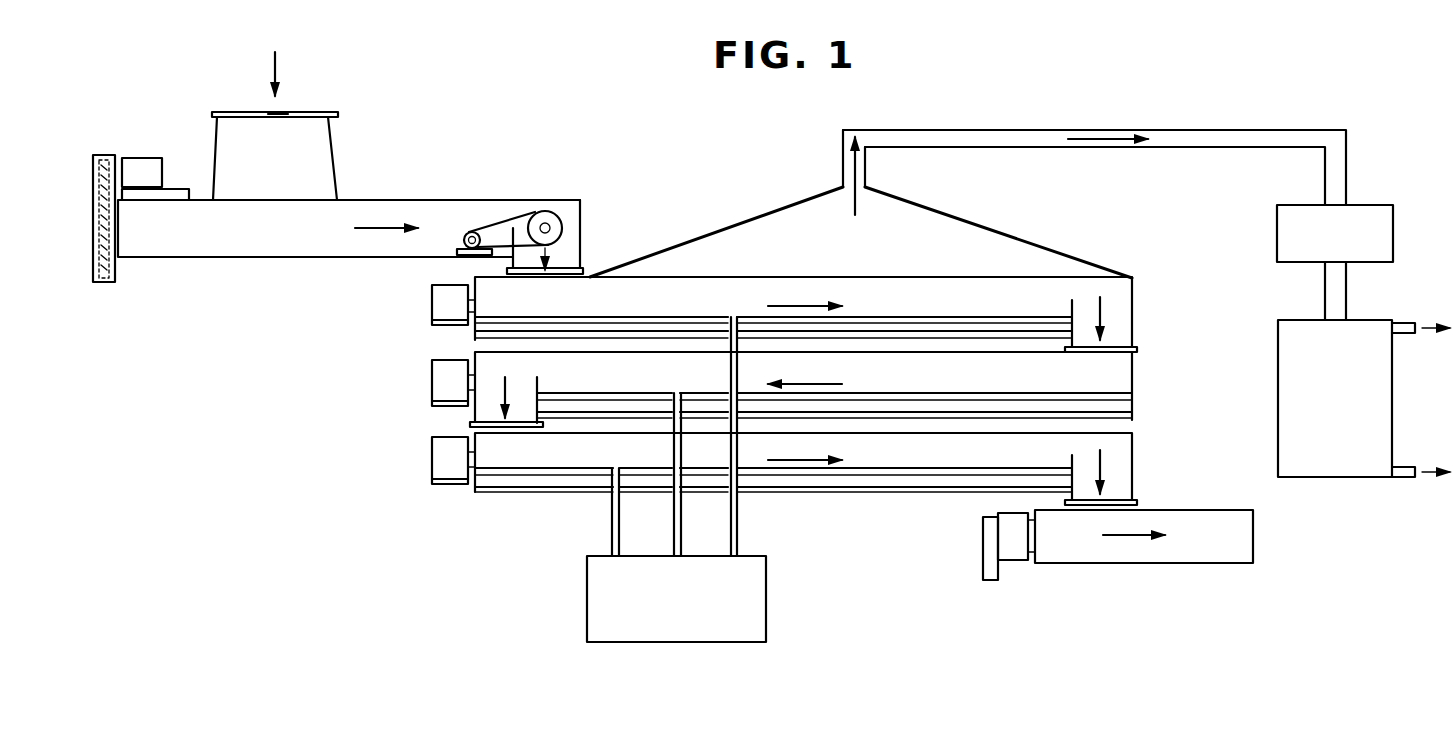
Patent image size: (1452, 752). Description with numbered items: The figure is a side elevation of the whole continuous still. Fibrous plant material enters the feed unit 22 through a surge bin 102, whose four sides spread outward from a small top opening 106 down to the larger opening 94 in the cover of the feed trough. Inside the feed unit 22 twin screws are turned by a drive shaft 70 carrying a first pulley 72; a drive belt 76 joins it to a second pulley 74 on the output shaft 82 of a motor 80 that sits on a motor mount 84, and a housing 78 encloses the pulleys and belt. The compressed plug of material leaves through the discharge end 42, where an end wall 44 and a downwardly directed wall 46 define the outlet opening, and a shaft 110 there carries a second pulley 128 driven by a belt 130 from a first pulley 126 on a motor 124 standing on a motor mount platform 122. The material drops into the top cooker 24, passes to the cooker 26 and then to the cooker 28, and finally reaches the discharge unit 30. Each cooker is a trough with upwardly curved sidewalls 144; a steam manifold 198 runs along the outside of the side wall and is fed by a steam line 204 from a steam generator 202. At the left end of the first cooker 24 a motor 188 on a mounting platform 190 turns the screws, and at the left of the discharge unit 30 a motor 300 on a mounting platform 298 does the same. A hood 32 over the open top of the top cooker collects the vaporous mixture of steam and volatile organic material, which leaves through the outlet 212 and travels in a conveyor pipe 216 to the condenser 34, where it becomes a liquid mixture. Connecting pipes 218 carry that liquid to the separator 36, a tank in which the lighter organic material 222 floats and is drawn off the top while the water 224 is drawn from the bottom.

The feed unit 22 is at (283, 249).
The cooker 24 is at (673, 310).
The cooker 26 is at (643, 390).
The cooker 28 is at (638, 464).
The discharge unit 30 is at (1230, 553).
The hood 32 is at (924, 252).
The condenser 34 is at (1345, 246).
The separator 36 is at (1345, 396).
The discharge end 42 is at (584, 202).
The end wall 44 is at (586, 277).
The downwardly directed wall 46 is at (507, 270).
The drive shaft 70 is at (112, 230).
The first pulley 72 is at (120, 258).
The second pulley 74 is at (105, 150).
The drive belt 76 is at (128, 211).
The housing 78 is at (103, 282).
The motor 80 is at (146, 160).
The output shaft 82 is at (122, 160).
The motor mount 84 is at (170, 190).
The opening 94 is at (272, 201).
The surge bin 102 is at (282, 163).
The opening 106 is at (282, 113).
The shaft 110 is at (580, 236).
The motor mount platform 122 is at (456, 252).
The motor 124 is at (468, 232).
The first pulley 126 is at (478, 232).
The second pulley 128 is at (560, 228).
The belt 130 is at (505, 228).
The sidewall 144 is at (1035, 262).
The motor 188 is at (408, 457).
The mounting platform 190 is at (435, 325).
The steam manifold 198 is at (925, 320).
The steam generator 202 is at (692, 604).
The steam line 204 is at (731, 532).
The outlet 212 is at (845, 190).
The conveyor pipe 216 is at (900, 147).
The connecting pipes 218 is at (1325, 290).
The lighter organic material 222 is at (1410, 323).
The water 224 is at (1405, 480).
The mounting platform 298 is at (1012, 562).
The motor 300 is at (998, 517).